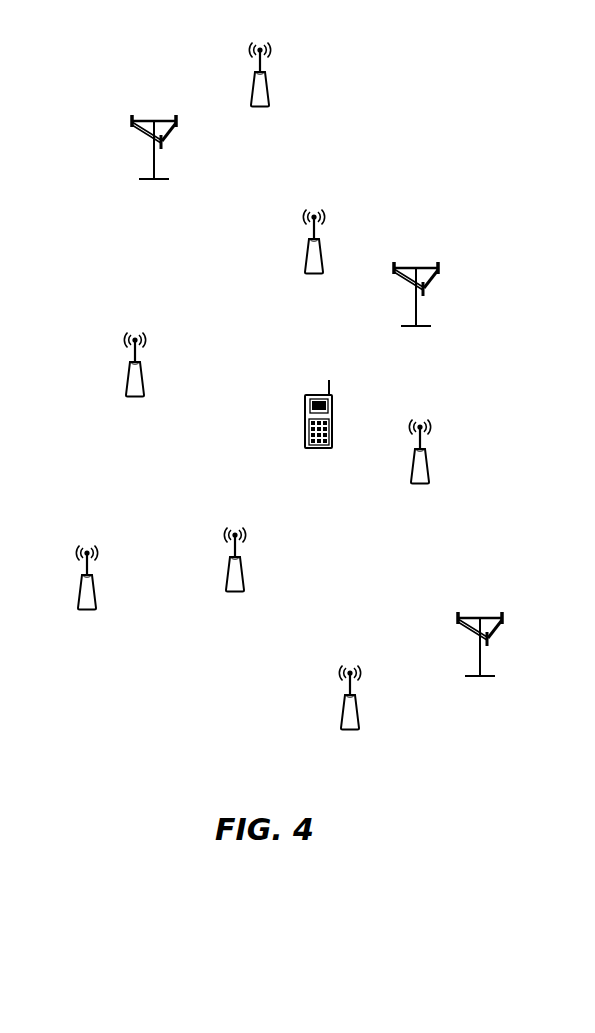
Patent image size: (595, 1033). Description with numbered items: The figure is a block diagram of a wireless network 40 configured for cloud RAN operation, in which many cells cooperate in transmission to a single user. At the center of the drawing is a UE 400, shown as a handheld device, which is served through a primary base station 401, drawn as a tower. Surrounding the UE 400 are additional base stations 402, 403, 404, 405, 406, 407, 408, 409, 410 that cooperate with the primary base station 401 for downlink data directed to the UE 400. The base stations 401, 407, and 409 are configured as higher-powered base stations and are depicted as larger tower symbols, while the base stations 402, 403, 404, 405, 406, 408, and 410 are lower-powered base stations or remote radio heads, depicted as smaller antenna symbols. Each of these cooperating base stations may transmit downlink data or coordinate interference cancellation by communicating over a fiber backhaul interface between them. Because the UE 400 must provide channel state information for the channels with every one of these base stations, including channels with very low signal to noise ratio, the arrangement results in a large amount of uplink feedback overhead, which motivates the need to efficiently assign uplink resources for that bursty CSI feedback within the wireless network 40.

The wireless network 40 is at (484, 90).
The UE 400 is at (310, 448).
The primary base station 401 is at (420, 326).
The base station 402 is at (422, 483).
The base station 403 is at (316, 273).
The base station 404 is at (132, 396).
The base station 405 is at (237, 591).
The base station 406 is at (89, 609).
The base station 407 is at (484, 676).
The base station 408 is at (352, 729).
The base station 409 is at (158, 180).
The base station 410 is at (262, 107).